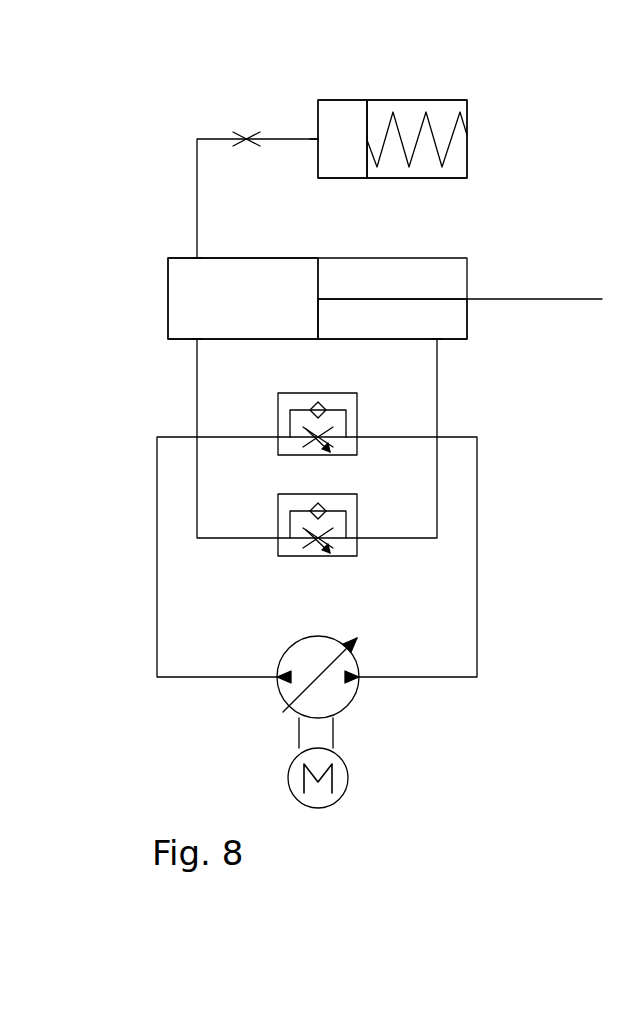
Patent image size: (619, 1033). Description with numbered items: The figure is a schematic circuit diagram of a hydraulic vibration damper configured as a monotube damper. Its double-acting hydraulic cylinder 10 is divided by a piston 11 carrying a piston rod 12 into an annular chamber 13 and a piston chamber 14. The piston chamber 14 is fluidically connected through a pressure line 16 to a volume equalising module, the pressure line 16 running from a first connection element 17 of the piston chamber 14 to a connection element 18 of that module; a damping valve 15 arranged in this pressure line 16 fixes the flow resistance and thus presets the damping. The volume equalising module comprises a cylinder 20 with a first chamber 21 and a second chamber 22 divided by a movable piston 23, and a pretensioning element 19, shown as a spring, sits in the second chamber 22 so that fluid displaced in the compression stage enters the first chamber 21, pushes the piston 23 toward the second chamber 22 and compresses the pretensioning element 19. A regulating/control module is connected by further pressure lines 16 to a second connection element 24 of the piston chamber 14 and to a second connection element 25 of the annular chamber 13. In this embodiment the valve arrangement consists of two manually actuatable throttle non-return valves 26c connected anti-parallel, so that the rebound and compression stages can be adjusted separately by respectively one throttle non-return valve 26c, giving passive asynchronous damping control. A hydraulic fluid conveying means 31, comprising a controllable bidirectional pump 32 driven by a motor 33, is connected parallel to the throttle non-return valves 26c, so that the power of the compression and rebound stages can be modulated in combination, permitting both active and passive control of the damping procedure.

The double-acting hydraulic cylinder 10 is at (323, 291).
The piston 11 is at (318, 277).
The piston rod 12 is at (547, 297).
The annular chamber 13 is at (455, 318).
The piston chamber 14 is at (183, 310).
The damping valve 15 is at (247, 132).
The pressure line 16 is at (197, 178).
The first connection element 17 is at (198, 257).
The connection element 18 is at (318, 144).
The pretensioning element 19 is at (422, 110).
The cylinder 20 is at (404, 110).
The first chamber 21 is at (330, 115).
The second chamber 22 is at (460, 158).
The piston 23 is at (367, 115).
The second connection element 24 is at (200, 340).
The second connection element 25 is at (428, 340).
The throttle non-return valve 26c is at (350, 412).
The hydraulic fluid conveying means 31 is at (313, 722).
The bidirectional pump 32 is at (338, 700).
The motor 33 is at (340, 782).